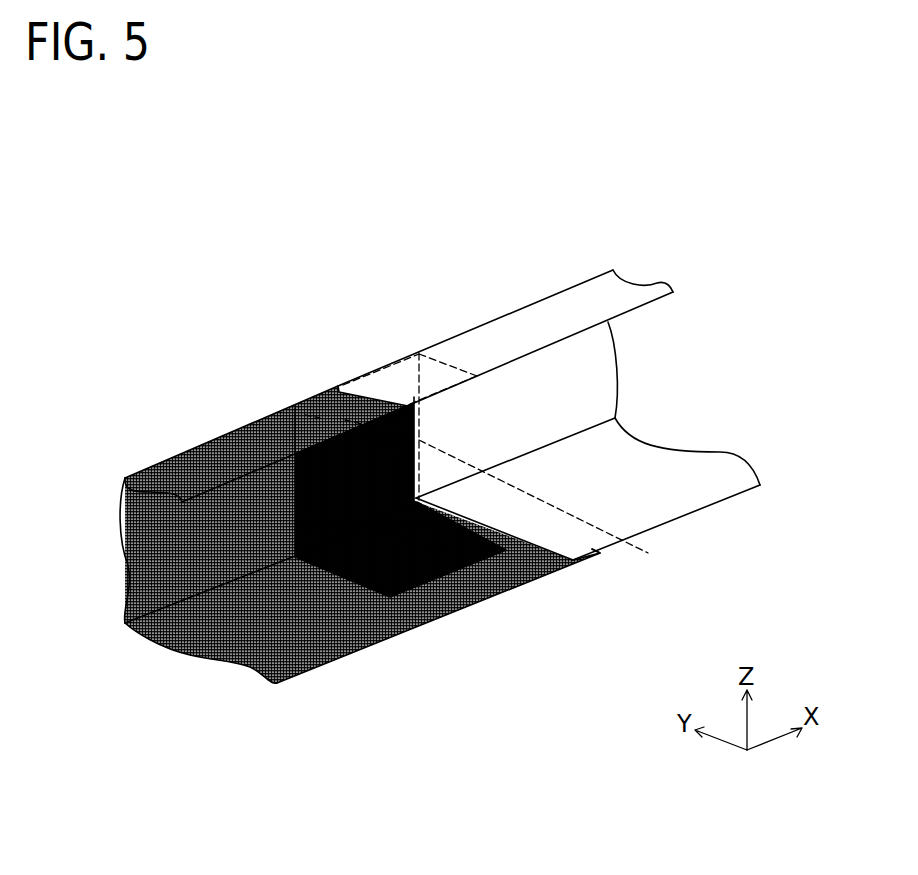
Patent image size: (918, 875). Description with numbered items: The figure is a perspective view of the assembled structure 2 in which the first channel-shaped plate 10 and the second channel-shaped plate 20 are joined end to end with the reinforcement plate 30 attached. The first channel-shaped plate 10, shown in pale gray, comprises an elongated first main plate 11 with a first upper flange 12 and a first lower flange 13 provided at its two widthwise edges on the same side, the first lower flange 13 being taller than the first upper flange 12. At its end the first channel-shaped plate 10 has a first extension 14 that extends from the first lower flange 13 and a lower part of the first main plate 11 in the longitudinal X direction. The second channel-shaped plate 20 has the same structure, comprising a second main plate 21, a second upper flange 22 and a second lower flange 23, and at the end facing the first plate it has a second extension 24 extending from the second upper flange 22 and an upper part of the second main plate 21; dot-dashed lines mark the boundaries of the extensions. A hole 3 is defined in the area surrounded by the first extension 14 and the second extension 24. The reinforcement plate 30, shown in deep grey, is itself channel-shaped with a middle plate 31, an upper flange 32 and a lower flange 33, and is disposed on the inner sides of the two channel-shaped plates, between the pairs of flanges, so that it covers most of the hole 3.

The joint structure 2 is at (205, 222).
The hole 3 is at (545, 504).
The first channel-shaped plate 10 is at (182, 405).
The first main plate 11 is at (122, 552).
The first upper flange 12 is at (258, 432).
The first lower flange 13 is at (172, 643).
The first extension 14 is at (607, 557).
The second channel-shaped plate 20 is at (507, 272).
The second main plate 21 is at (613, 383).
The second upper flange 22 is at (657, 283).
The second lower flange 23 is at (663, 510).
The second extension 24 is at (408, 342).
The reinforcement plate 30 is at (385, 620).
The middle plate 31 is at (438, 585).
The upper flange 32 is at (322, 396).
The lower flange 33 is at (415, 587).